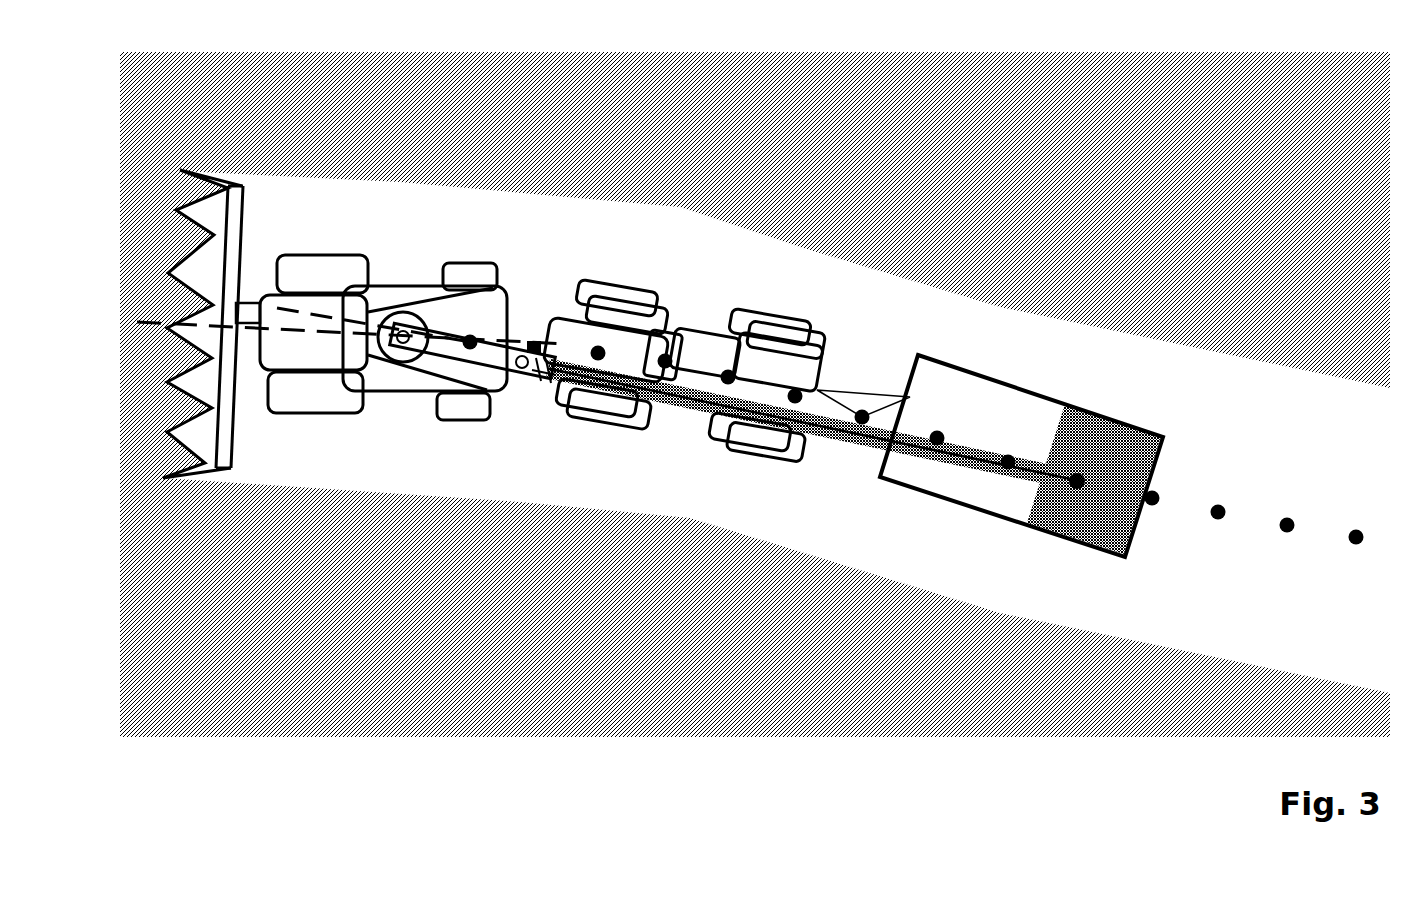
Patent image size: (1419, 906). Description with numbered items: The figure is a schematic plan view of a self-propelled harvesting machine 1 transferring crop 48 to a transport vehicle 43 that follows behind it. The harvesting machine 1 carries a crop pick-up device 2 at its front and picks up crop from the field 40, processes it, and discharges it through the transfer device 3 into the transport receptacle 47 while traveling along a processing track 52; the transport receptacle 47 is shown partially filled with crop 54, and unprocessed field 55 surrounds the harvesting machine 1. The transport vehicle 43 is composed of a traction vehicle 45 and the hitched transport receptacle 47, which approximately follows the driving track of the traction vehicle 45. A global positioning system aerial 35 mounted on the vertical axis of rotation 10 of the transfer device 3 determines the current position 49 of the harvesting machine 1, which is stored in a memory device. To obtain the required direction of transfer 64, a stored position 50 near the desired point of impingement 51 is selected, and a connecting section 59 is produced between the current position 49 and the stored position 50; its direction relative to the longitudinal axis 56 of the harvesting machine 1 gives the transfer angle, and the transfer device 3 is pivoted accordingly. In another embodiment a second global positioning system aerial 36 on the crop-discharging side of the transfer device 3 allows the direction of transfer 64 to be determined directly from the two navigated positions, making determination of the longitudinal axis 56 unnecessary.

The harvesting machine 1 is at (337, 428).
The crop pick-up device 2 is at (203, 434).
The transfer device 3 is at (505, 344).
The vertical axis of rotation 10 is at (399, 376).
The global positioning system aerial 35 is at (399, 330).
The current position 49 is at (352, 280).
The second global positioning system aerial 36 is at (521, 369).
The field 40 is at (763, 748).
The transport vehicle 43 is at (838, 487).
The traction vehicle 45 is at (684, 380).
The transport receptacle 47 is at (1031, 463).
The crop 48 is at (600, 392).
The stored position 50 is at (472, 337).
The desired point of impingement 51 is at (1080, 488).
The processing track 52 is at (1228, 599).
The crop 54 is at (1123, 443).
The unprocessed field 55 is at (796, 669).
The longitudinal axis 56 is at (250, 305).
The connecting section 59 is at (723, 418).
The direction of transfer 64 is at (327, 314).